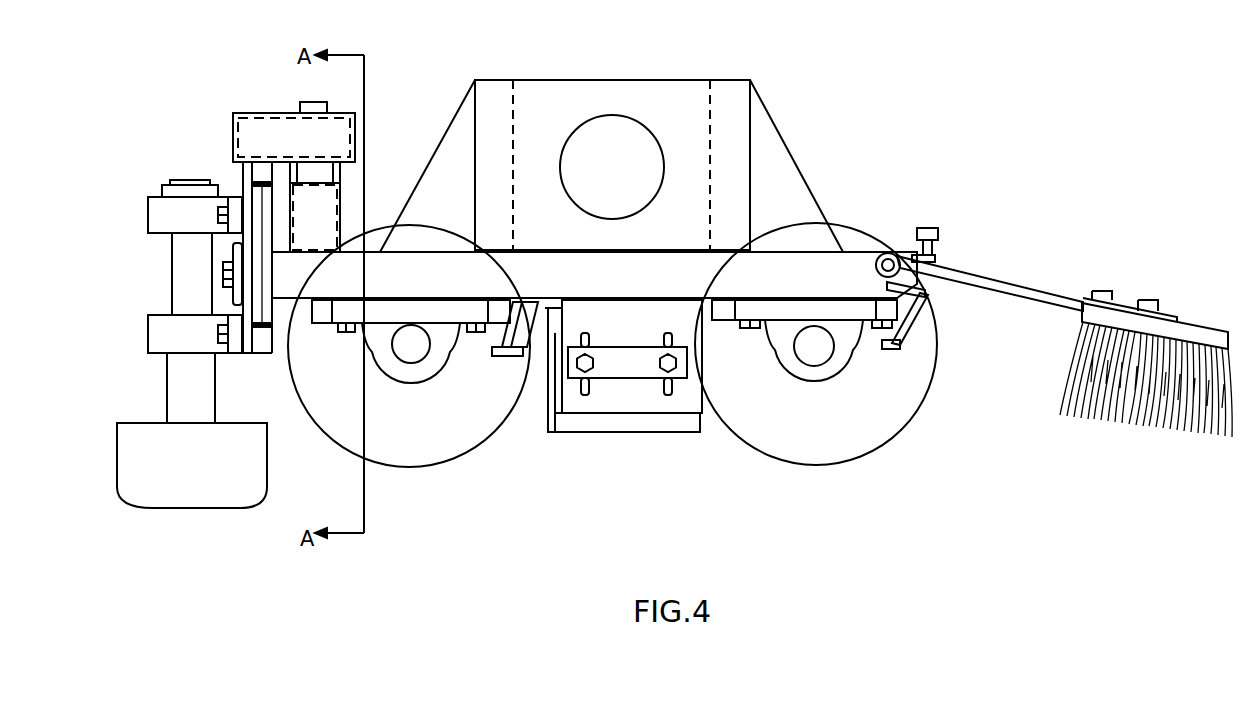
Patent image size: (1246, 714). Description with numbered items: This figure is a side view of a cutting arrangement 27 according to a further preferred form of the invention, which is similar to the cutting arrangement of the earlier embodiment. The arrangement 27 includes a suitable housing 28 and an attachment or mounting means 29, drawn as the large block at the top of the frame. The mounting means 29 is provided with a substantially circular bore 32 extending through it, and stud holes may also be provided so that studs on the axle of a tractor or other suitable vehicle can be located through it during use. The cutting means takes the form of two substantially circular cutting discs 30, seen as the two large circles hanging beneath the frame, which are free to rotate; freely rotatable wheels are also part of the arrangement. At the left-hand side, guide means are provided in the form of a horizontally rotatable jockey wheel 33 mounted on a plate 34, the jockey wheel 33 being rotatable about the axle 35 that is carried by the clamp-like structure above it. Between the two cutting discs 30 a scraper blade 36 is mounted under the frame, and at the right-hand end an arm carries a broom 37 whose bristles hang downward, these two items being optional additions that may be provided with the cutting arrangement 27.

The cutting arrangement 27 is at (682, 466).
The housing 28 is at (550, 290).
The attachment or mounting means 29 is at (528, 92).
The cutting discs 30 is at (430, 455).
The circular bore 32 is at (618, 128).
The jockey wheel 33 is at (152, 477).
The plate 34 is at (243, 182).
The axle 35 is at (183, 272).
The scraper blade 36 is at (583, 433).
The broom 37 is at (1137, 417).